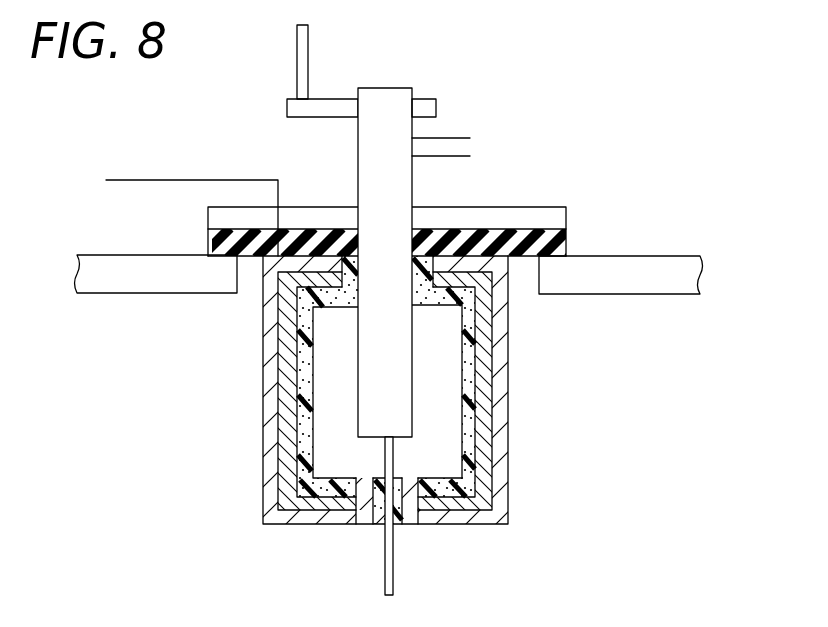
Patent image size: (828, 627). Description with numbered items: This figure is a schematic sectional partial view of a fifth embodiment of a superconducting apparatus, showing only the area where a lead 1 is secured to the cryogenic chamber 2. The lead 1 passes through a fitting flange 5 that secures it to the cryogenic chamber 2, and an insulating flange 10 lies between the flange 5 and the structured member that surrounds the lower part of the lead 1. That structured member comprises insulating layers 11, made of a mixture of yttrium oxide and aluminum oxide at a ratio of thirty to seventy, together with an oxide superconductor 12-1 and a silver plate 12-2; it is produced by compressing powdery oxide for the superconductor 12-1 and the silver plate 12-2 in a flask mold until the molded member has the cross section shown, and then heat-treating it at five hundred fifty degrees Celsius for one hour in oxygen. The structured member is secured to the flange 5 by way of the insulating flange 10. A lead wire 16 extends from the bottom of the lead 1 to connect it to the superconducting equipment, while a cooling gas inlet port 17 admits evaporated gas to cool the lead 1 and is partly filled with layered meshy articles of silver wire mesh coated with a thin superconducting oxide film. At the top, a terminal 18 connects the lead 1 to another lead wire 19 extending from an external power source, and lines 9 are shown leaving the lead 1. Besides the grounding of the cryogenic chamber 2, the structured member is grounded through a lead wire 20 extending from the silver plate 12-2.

The lead 1 is at (402, 333).
The cryogenic chamber 2 is at (663, 267).
The fitting flange 5 is at (558, 219).
The lead wires 9 is at (475, 145).
The insulating flange 10 is at (557, 238).
The insulating layers 11 is at (468, 497).
The oxide superconductor 12-1 is at (490, 477).
The silver plate 12-2 is at (508, 452).
The lead wire 16 is at (393, 560).
The cooling gas inlet port 17 is at (363, 517).
The flange 18 is at (432, 105).
The lead wire 19 is at (297, 68).
The lead wire 20 is at (174, 180).